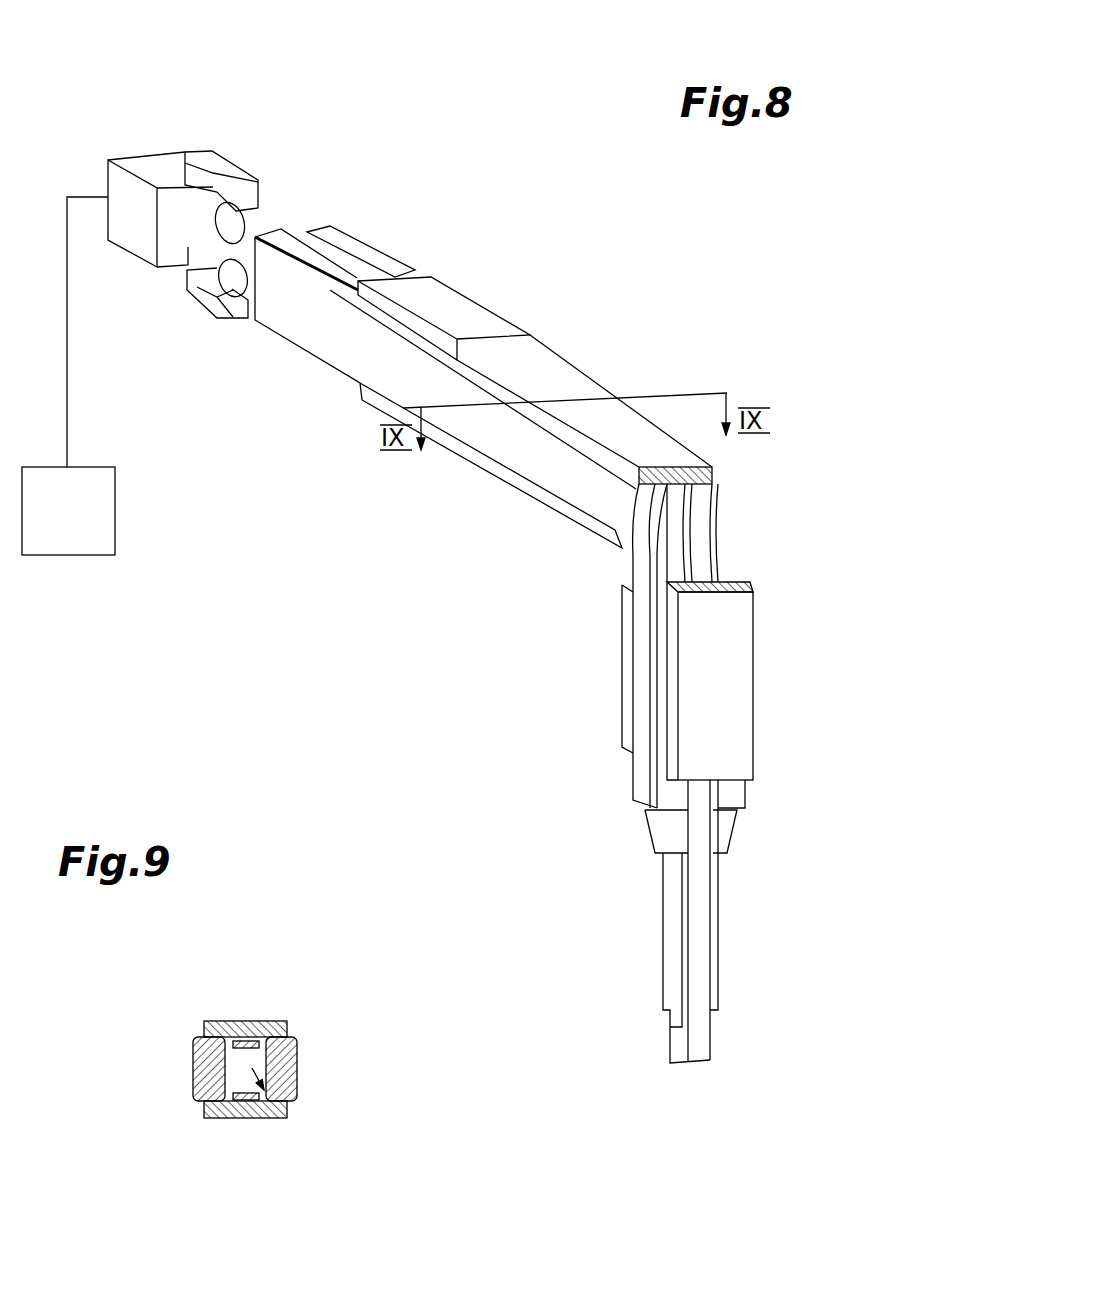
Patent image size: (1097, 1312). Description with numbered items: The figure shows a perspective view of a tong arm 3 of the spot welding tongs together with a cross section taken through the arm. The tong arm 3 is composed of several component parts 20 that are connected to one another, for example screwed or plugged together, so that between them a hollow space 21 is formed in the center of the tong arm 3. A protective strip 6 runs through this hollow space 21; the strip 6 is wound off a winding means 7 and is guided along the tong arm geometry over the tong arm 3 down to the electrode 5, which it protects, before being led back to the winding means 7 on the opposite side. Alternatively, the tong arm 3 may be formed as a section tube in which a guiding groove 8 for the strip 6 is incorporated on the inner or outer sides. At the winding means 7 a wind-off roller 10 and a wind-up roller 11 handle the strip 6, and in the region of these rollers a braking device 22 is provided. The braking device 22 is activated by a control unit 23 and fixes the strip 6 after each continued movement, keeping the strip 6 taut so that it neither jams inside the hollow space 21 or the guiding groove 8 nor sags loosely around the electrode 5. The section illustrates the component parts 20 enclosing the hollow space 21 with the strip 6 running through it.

In FIG. 8, the tong arm 3 is at (412, 598).
In FIG. 8, the electrode 5 is at (657, 1048).
In FIG. 8, the strip 6 is at (698, 967).
In FIG. 9, the strip 6 is at (253, 1038).
In FIG. 8, the winding means 7 is at (333, 140).
In FIG. 8, the guiding groove 8 is at (632, 490).
In FIG. 8, the wind-off roller 10 is at (230, 226).
In FIG. 8, the wind-up roller 11 is at (237, 288).
In FIG. 8, the component parts 20 is at (630, 437).
In FIG. 9, the component parts 20 is at (236, 1021).
In FIG. 8, the hollow space 21 is at (703, 535).
In FIG. 9, the hollow space 21 is at (288, 1104).
In FIG. 8, the braking device 22 is at (226, 168).
In FIG. 8, the control unit 23 is at (98, 502).